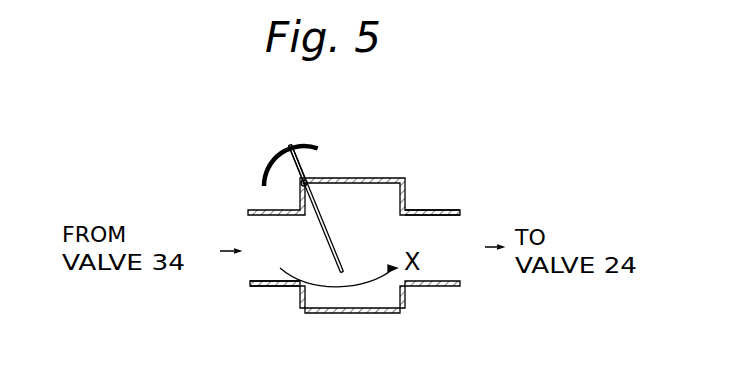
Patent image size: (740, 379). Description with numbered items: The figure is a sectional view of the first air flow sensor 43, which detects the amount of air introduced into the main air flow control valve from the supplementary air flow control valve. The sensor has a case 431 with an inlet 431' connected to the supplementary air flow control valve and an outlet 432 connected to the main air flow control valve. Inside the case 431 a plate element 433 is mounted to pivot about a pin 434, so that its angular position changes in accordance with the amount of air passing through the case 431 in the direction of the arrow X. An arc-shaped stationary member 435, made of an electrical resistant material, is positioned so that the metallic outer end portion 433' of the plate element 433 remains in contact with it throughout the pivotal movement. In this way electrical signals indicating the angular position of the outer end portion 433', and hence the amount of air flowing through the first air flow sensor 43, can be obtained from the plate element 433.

The first air flow sensor 43 is at (288, 327).
The case 431 is at (355, 179).
The inlet 431' is at (266, 308).
The outlet 432 is at (430, 210).
The plate element 433 is at (342, 208).
The outer end portion 433' is at (347, 140).
The pin 434 is at (307, 182).
The stationary member 435 is at (270, 166).